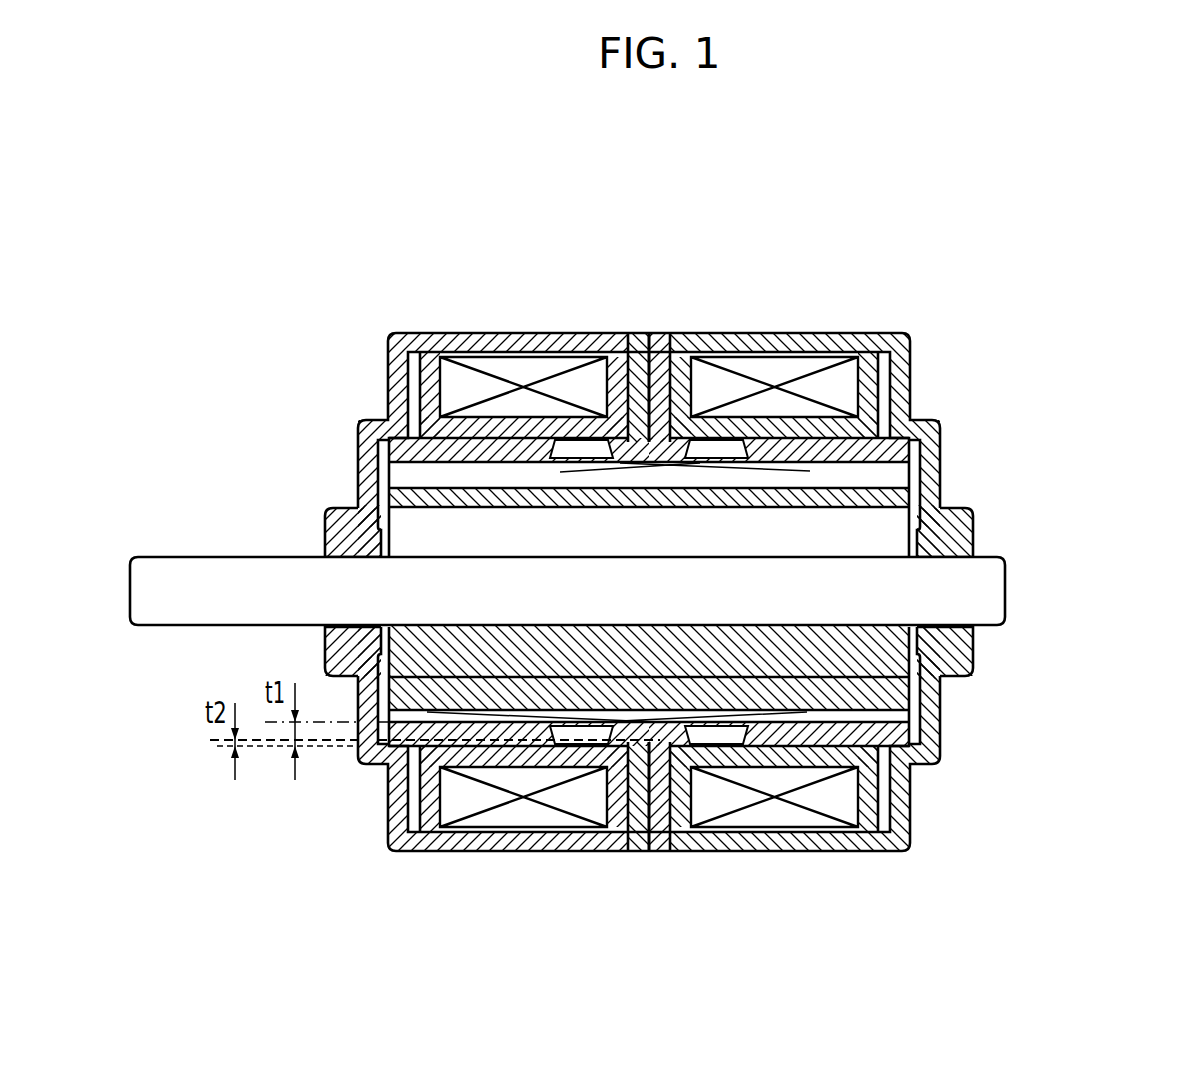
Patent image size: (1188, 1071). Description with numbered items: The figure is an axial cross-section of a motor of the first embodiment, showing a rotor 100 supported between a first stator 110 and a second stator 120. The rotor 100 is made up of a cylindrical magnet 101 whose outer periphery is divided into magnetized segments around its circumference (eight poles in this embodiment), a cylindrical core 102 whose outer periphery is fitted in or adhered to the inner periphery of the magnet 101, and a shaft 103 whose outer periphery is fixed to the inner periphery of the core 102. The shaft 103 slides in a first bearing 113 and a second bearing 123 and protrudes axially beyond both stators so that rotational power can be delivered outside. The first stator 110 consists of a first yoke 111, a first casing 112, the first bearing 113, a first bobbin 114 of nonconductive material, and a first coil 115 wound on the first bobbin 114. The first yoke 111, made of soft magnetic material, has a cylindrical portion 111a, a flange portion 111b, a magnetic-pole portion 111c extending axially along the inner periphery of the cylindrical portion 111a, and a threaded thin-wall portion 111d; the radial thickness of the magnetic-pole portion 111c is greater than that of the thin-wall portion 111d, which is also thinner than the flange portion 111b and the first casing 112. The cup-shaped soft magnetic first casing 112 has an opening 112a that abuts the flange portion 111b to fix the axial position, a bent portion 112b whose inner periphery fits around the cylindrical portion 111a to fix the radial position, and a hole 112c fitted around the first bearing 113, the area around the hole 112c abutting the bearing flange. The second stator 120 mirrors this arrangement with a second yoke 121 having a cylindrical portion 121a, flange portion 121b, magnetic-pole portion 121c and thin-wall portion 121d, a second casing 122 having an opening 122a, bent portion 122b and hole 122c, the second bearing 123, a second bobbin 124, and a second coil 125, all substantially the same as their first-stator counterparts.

The rotor 100 is at (657, 618).
The magnet 101 is at (751, 725).
The core 102 is at (751, 608).
The shaft 103 is at (621, 620).
The first stator 110 is at (643, 178).
The first yoke 111 is at (519, 569).
The cylindrical portion 111a is at (519, 348).
The flange portion 111b is at (524, 336).
The magnetic-pole portion 111c is at (519, 827).
The thin-wall portion 111d is at (524, 839).
The first casing 112 is at (424, 525).
The opening 112a is at (620, 542).
The bent portion 112b is at (358, 499).
The hole 112c is at (290, 457).
The first bearing 113 is at (273, 437).
The first bobbin 114 is at (490, 518).
The first coil 115 is at (507, 515).
The second stator 120 is at (1140, 178).
The second yoke 121 is at (769, 571).
The cylindrical portion 121a is at (779, 348).
The flange portion 121b is at (774, 338).
The magnetic-pole portion 121c is at (779, 827).
The thin-wall portion 121d is at (754, 840).
The second casing 122 is at (873, 527).
The opening 122a is at (683, 542).
The bent portion 122b is at (942, 499).
The hole 122c is at (1007, 457).
The second bearing 123 is at (1023, 438).
The second bobbin 124 is at (812, 519).
The second coil 125 is at (791, 513).